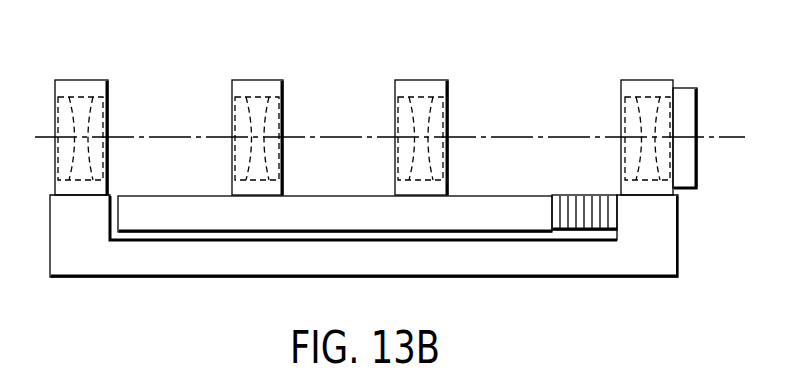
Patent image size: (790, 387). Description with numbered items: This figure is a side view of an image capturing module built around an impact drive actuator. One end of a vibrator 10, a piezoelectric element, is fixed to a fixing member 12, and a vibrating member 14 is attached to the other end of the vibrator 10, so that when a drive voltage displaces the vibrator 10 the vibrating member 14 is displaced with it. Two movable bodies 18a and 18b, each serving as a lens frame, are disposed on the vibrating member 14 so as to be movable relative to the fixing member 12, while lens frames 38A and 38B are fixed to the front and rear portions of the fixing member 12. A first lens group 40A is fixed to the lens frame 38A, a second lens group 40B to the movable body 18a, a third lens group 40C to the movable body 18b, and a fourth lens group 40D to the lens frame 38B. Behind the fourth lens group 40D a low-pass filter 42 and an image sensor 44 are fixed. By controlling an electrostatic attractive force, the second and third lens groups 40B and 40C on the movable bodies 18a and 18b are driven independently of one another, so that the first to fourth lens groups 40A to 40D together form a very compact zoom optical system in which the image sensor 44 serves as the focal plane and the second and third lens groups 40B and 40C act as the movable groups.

The vibrator 10 is at (580, 205).
The fixing member 12 is at (535, 267).
The vibrating member 14 is at (500, 201).
The movable body 18a is at (258, 78).
The movable body 18b is at (423, 78).
The lens frame 38A is at (81, 78).
The lens frame 38B is at (647, 78).
The first lens group 40A is at (110, 113).
The second lens group 40B is at (285, 113).
The third lens group 40C is at (452, 113).
The fourth lens group 40D is at (620, 115).
The low-pass filter 42 is at (668, 165).
The image sensor 44 is at (686, 86).